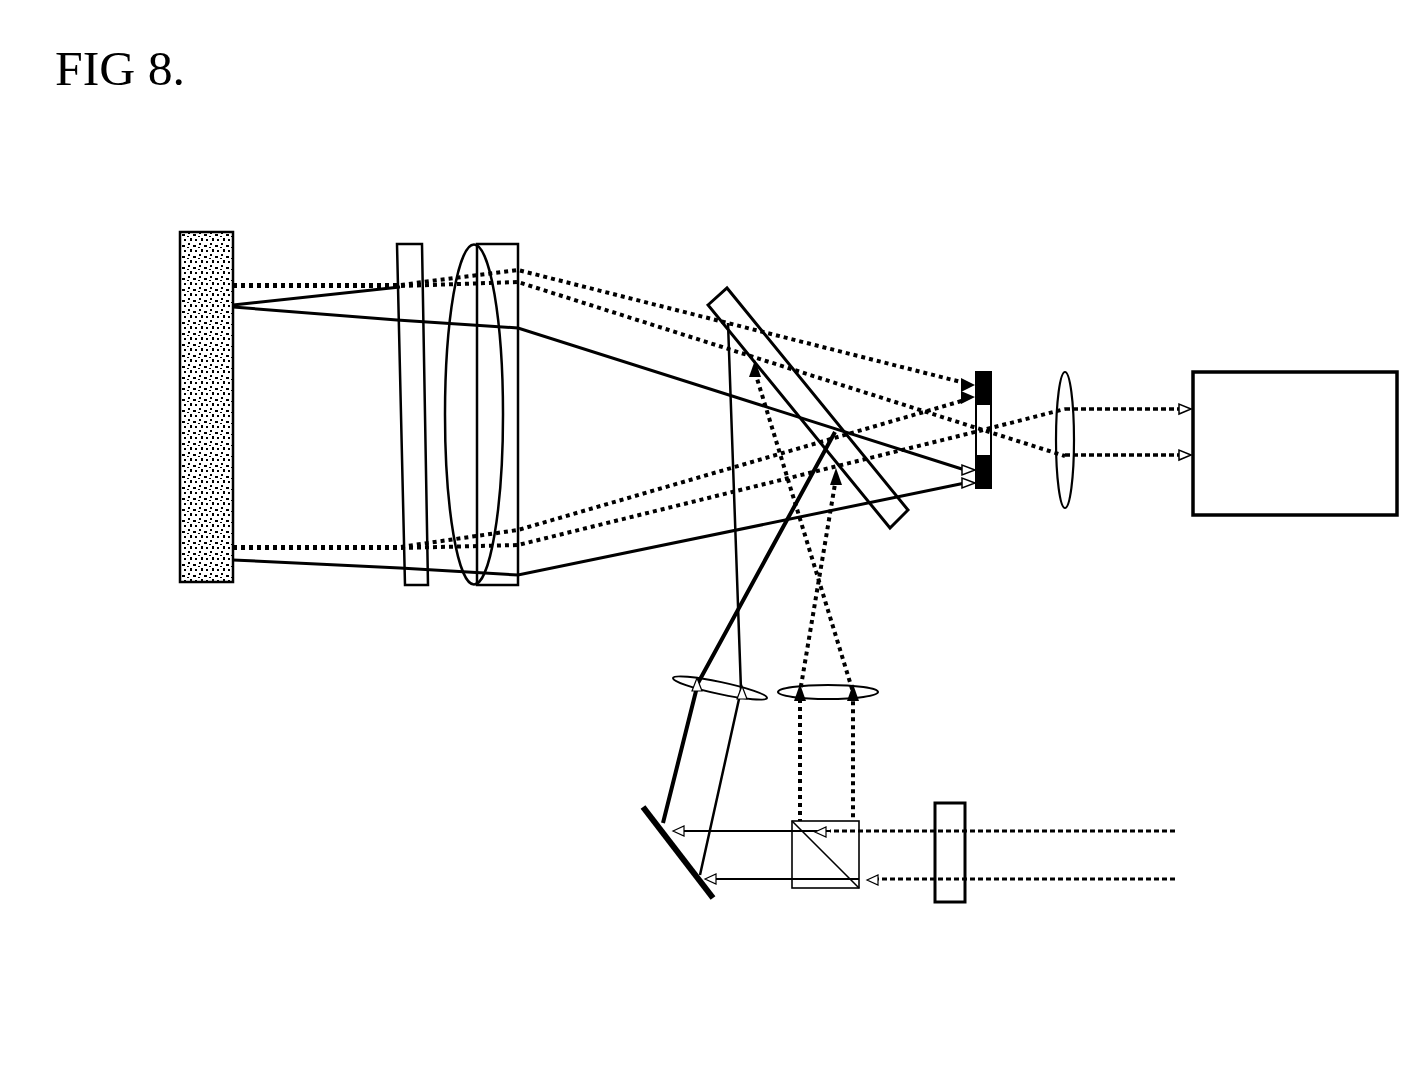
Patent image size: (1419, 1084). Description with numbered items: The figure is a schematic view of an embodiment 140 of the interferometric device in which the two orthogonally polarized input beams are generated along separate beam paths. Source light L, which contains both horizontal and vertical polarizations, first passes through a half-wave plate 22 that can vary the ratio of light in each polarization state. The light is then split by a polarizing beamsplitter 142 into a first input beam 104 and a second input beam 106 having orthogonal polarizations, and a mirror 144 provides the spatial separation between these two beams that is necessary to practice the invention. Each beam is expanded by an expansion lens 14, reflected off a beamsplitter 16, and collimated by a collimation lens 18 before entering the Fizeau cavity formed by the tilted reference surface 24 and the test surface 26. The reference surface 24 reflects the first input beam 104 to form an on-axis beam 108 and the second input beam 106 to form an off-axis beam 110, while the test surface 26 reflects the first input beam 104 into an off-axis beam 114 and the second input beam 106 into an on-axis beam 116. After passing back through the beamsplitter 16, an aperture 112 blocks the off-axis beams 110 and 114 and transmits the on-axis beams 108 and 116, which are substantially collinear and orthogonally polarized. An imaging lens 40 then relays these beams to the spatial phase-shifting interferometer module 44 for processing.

The embodiment 140 is at (940, 194).
The test surface 26 is at (235, 381).
The reference surface 24 is at (424, 393).
The collimation lens 18 is at (508, 389).
The beamsplitter 16 is at (808, 387).
The beam 110 is at (604, 331).
The aperture 112 is at (1013, 400).
The imaging lens 40 is at (1087, 415).
The beam 108 is at (1128, 389).
The beam 116 is at (1128, 483).
The spatial phase-shifting interferometer module 44 is at (1295, 472).
The beam 114 is at (621, 526).
The first input beam 104 is at (746, 599).
The second input beam 106 is at (829, 590).
The expansion lens 14 is at (771, 706).
The mirror 144 is at (711, 881).
The polarizing beamsplitter 142 is at (841, 883).
The half-wave plate 22 is at (965, 879).
The collimated light L is at (924, 877).